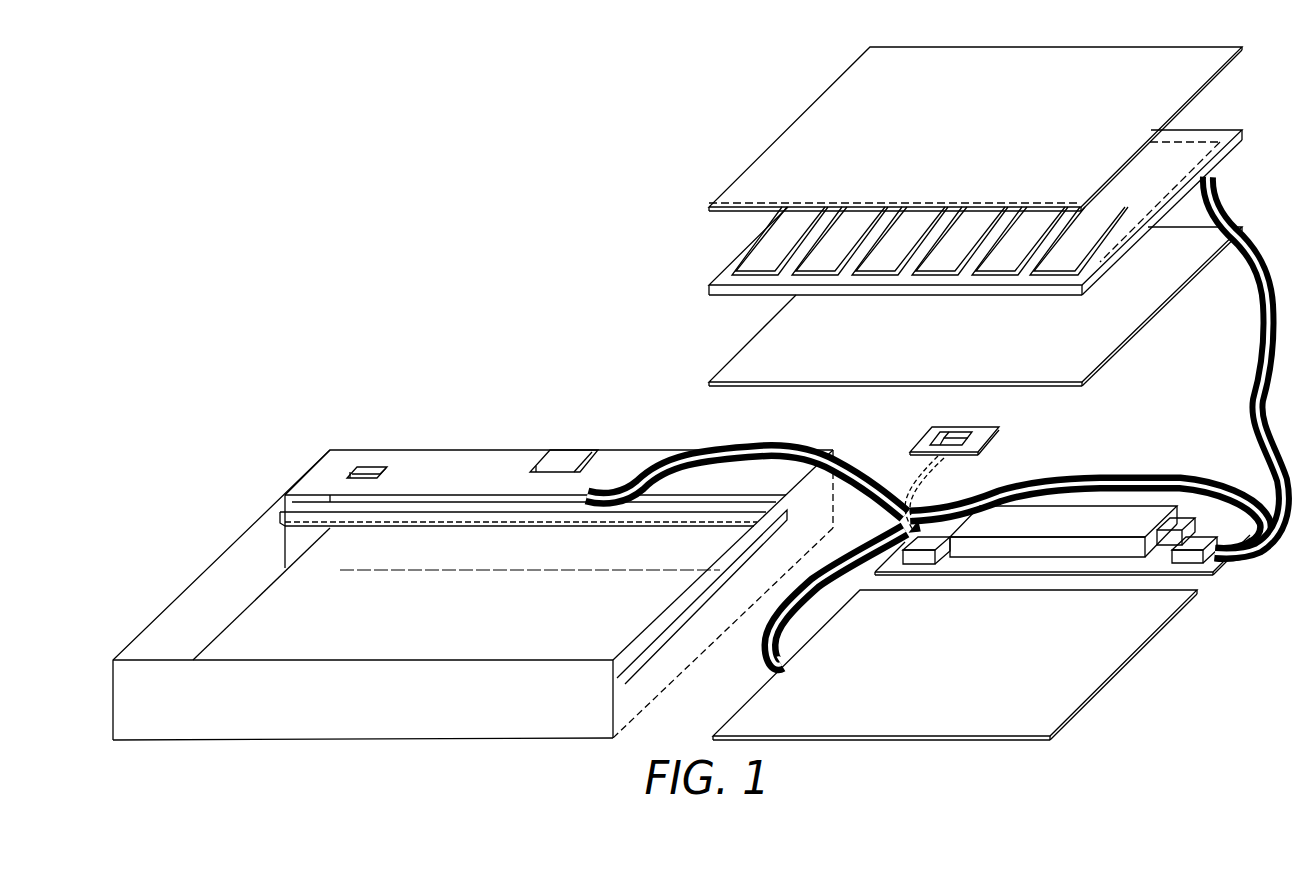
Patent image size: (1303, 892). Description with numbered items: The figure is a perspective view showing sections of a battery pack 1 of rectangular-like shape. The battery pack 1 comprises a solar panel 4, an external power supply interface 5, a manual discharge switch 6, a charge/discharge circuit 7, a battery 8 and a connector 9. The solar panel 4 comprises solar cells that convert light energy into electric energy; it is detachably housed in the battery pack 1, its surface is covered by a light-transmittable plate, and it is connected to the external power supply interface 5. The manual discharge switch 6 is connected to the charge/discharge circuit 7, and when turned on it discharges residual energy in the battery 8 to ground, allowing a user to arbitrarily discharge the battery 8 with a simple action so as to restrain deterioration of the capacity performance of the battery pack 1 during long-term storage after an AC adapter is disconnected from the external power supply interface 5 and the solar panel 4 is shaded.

The battery pack 1 is at (473, 566).
The solar panel 4 is at (981, 187).
The external power supply interface 5 is at (935, 421).
The manual discharge switch 6 is at (962, 462).
The charge/discharge circuit 7 is at (1063, 526).
The battery 8 is at (955, 665).
The connector 9 is at (567, 432).